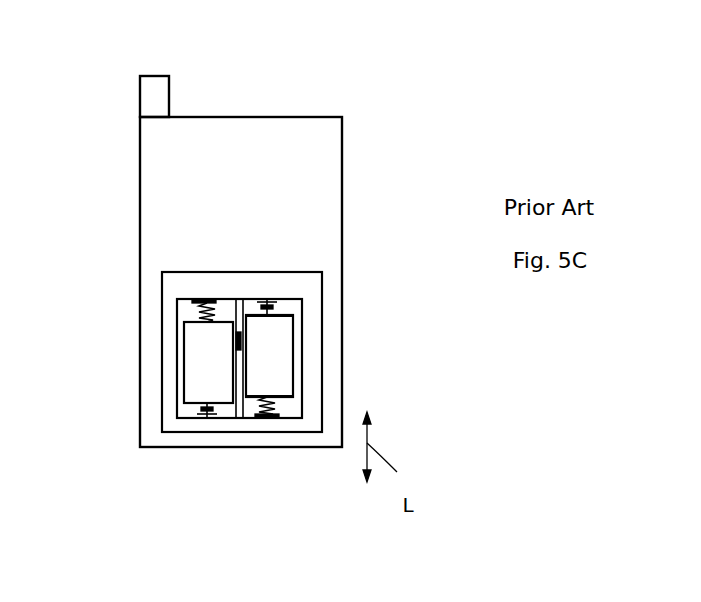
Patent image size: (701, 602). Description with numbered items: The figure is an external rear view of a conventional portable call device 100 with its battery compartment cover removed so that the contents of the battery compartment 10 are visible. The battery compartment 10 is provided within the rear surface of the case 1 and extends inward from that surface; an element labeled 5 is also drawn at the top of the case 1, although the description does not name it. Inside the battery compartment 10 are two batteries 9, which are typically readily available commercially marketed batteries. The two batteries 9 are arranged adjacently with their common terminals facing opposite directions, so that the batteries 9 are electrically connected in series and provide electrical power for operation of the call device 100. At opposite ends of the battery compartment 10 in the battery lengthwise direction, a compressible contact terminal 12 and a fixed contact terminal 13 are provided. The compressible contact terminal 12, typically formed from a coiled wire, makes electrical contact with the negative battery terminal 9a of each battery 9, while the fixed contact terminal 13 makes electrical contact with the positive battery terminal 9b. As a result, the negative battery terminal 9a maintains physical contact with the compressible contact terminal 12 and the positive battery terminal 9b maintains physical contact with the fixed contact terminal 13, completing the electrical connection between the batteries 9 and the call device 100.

The call device 100 is at (450, 160).
The case 1 is at (342, 166).
The antenna 5 is at (170, 89).
The battery 9 is at (202, 347).
The negative battery terminal 9a is at (277, 393).
The positive battery terminal 9b is at (273, 308).
The battery compartment 10 is at (247, 420).
The compressible contact terminal 12 is at (200, 302).
The fixed contact terminal 13 is at (193, 420).